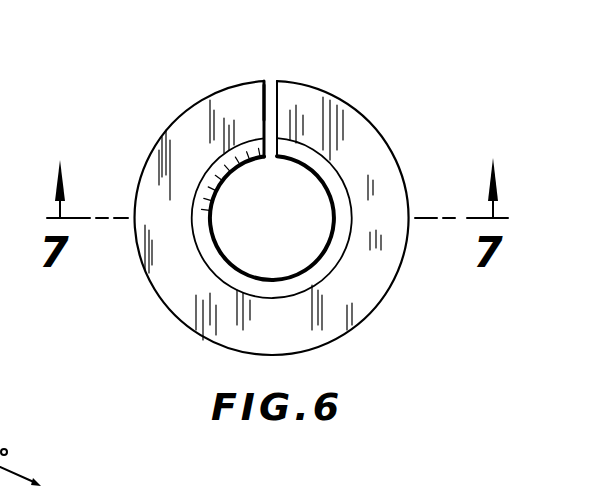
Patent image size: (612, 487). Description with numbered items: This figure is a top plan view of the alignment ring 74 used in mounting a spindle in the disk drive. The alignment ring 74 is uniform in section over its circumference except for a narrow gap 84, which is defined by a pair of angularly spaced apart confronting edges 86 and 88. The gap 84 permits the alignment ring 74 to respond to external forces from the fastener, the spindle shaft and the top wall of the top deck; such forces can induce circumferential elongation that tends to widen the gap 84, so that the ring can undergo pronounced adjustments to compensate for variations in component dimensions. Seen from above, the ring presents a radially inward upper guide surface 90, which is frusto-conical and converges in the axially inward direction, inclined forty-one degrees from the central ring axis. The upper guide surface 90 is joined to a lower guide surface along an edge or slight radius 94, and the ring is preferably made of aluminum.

The alignment ring 74 is at (398, 135).
The gap 84 is at (272, 81).
The confronting edge 86 is at (264, 100).
The confronting edge 88 is at (278, 107).
The upper guide surface 90 is at (322, 267).
The edge or slight radius 94 is at (214, 201).